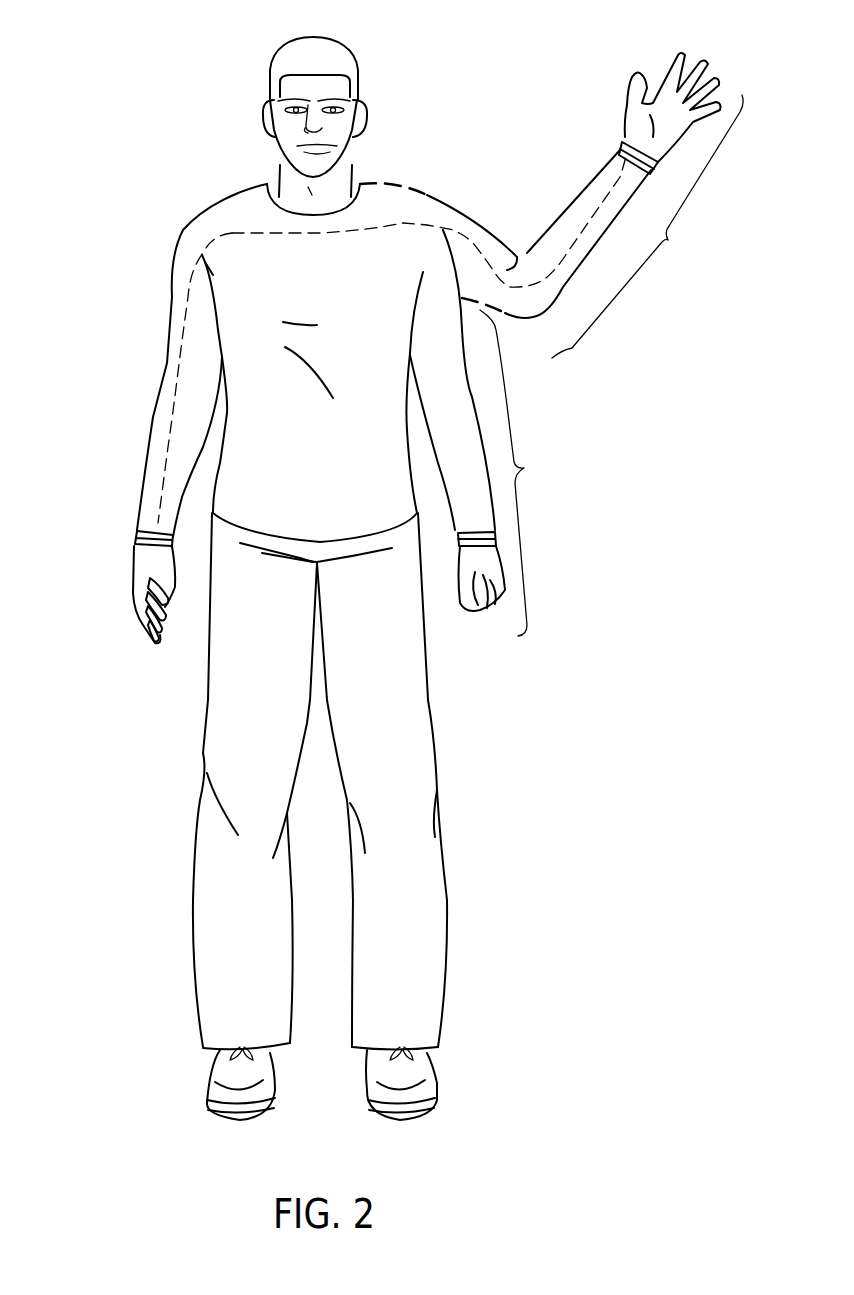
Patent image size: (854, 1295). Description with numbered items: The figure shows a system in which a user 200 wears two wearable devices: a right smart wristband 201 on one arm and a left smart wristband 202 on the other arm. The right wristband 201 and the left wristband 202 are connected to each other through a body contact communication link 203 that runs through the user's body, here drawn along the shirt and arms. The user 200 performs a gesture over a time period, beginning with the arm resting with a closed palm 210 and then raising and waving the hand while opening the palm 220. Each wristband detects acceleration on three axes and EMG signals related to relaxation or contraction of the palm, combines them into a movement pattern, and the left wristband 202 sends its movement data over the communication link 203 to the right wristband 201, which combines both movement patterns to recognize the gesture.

The user 200 is at (275, 52).
The right smart wristband 201 is at (133, 540).
The left smart wristband 202 is at (498, 542).
The body contact communication link 203 is at (230, 233).
The closed palm 210 is at (524, 466).
The open left palm 220 is at (668, 240).